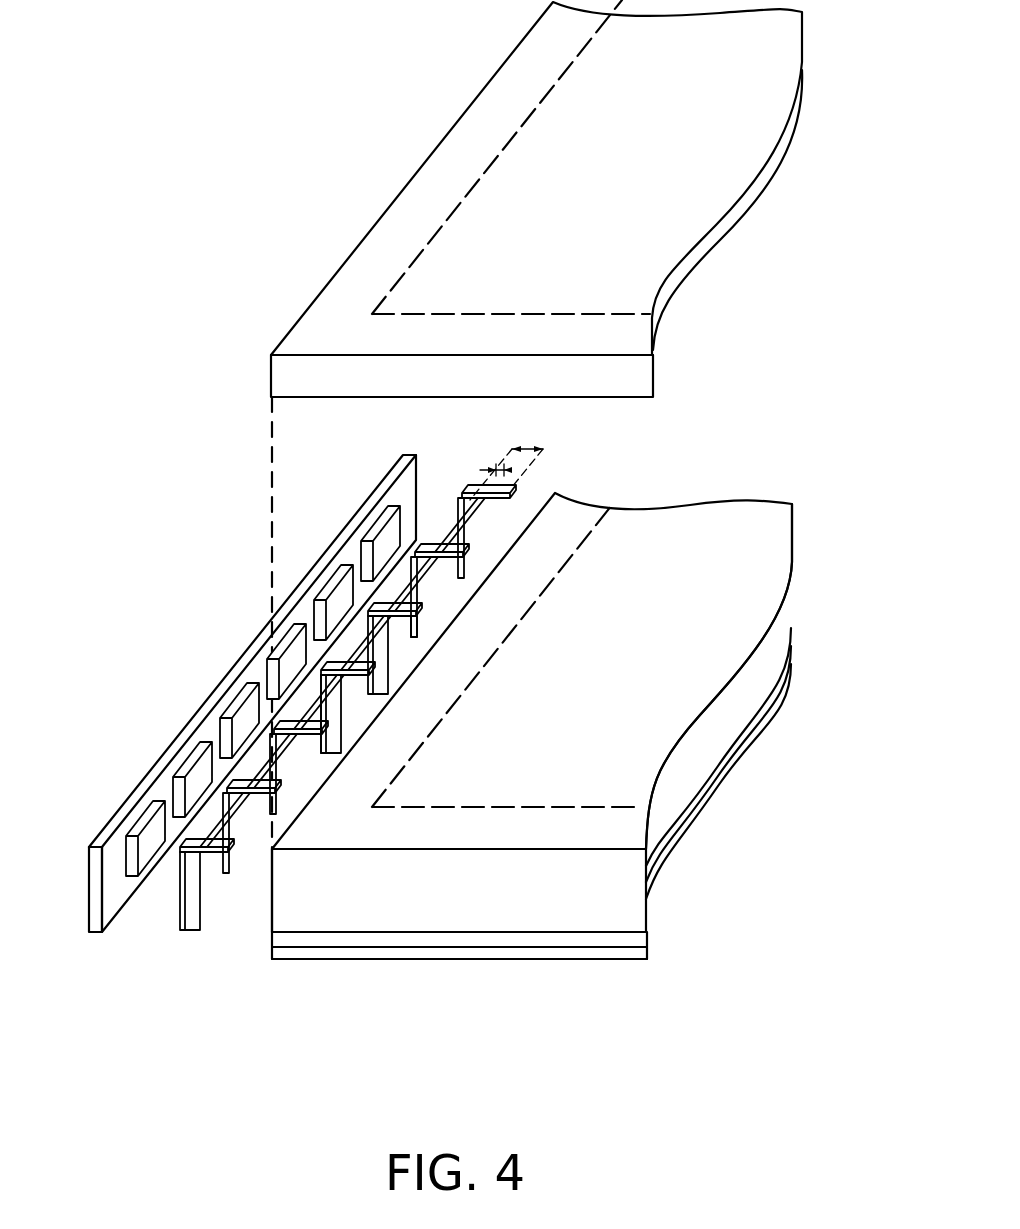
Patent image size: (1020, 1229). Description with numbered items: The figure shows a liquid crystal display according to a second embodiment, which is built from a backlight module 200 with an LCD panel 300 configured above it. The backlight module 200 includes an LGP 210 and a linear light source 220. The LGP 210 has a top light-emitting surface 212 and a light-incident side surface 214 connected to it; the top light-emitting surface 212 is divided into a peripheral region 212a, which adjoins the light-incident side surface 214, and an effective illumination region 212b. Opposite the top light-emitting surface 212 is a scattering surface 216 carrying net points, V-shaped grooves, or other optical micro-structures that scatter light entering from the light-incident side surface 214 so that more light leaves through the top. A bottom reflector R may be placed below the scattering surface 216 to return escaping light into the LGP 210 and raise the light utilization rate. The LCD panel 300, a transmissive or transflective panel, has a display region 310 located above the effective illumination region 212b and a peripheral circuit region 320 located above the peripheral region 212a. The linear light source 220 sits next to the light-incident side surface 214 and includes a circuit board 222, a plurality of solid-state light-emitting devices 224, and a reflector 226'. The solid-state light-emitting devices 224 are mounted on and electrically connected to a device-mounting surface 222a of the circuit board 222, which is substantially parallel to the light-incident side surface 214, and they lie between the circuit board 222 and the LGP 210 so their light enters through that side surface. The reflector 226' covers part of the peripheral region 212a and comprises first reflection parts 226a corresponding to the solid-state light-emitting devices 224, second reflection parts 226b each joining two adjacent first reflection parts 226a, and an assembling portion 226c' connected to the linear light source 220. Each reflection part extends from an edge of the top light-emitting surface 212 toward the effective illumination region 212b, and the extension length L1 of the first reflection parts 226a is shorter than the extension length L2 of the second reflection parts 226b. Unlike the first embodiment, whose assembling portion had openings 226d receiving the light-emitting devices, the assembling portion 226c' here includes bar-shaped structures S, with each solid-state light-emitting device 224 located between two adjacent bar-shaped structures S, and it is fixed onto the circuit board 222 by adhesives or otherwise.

The backlight module 200 is at (459, 724).
The LGP 210 is at (548, 710).
The top light-emitting surface 212 is at (582, 647).
The peripheral region 212a is at (547, 548).
The effective illumination region 212b is at (698, 557).
The light-incident side surface 214 is at (268, 903).
The scattering surface 216 is at (341, 937).
The linear light source 220 is at (348, 754).
The circuit board 222 is at (240, 733).
The device-mounting surface 222a is at (112, 855).
The solid-state light-emitting devices 224 is at (129, 878).
The reflector 226' is at (284, 811).
The first reflection parts 226a is at (417, 583).
The second reflection parts 226b is at (467, 543).
The assembling portion 226c' is at (459, 650).
The openings 226d is at (397, 632).
The LCD panel 300 is at (536, 198).
The display region 310 is at (475, 262).
The peripheral circuit region 320 is at (385, 265).
The extension length of first reflection parts L1 is at (498, 466).
The extension length of second reflection parts L2 is at (533, 447).
The bar-shaped structures S is at (337, 715).
The bottom reflector R is at (370, 958).